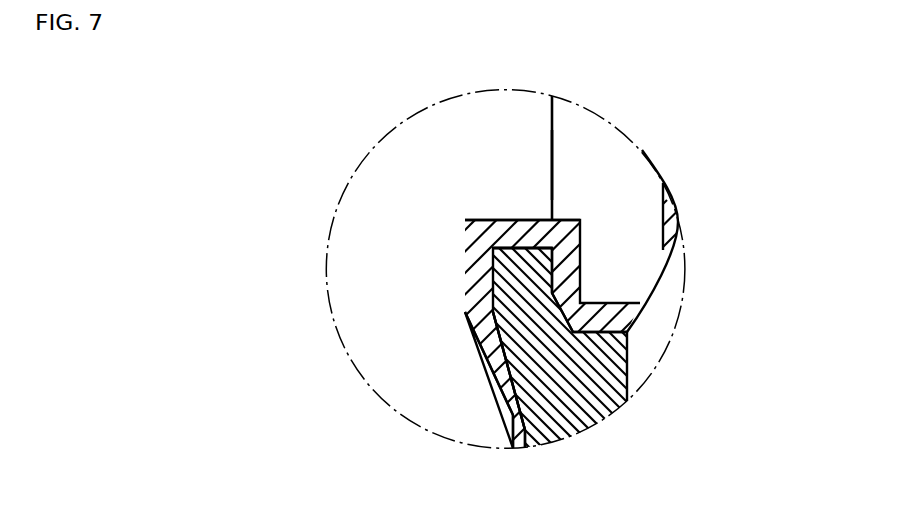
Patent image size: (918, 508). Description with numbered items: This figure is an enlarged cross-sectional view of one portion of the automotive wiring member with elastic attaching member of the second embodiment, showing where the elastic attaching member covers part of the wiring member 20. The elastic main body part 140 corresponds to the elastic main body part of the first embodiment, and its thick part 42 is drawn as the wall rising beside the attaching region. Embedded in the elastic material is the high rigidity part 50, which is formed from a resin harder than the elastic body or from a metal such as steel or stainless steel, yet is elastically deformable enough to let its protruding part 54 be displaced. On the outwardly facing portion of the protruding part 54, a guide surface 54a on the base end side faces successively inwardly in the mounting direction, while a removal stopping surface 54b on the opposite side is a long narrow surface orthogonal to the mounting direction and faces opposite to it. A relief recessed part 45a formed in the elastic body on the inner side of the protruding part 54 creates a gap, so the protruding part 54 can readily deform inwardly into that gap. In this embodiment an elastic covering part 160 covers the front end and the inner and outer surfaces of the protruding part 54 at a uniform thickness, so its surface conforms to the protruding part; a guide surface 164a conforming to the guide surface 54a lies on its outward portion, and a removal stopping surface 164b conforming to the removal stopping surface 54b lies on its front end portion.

The wiring member 20 is at (650, 282).
The thick part 42 is at (551, 153).
The relief recessed part 45a is at (660, 224).
The high rigidity part 50 is at (553, 420).
The protruding part 54 is at (493, 268).
The guide surface 54a is at (508, 345).
The removal stopping surface 54b is at (525, 248).
The elastic main body part 140 is at (551, 128).
The elastic covering part 160 is at (464, 245).
The guide surface 164a is at (500, 372).
The removal stopping surface 164b is at (480, 218).